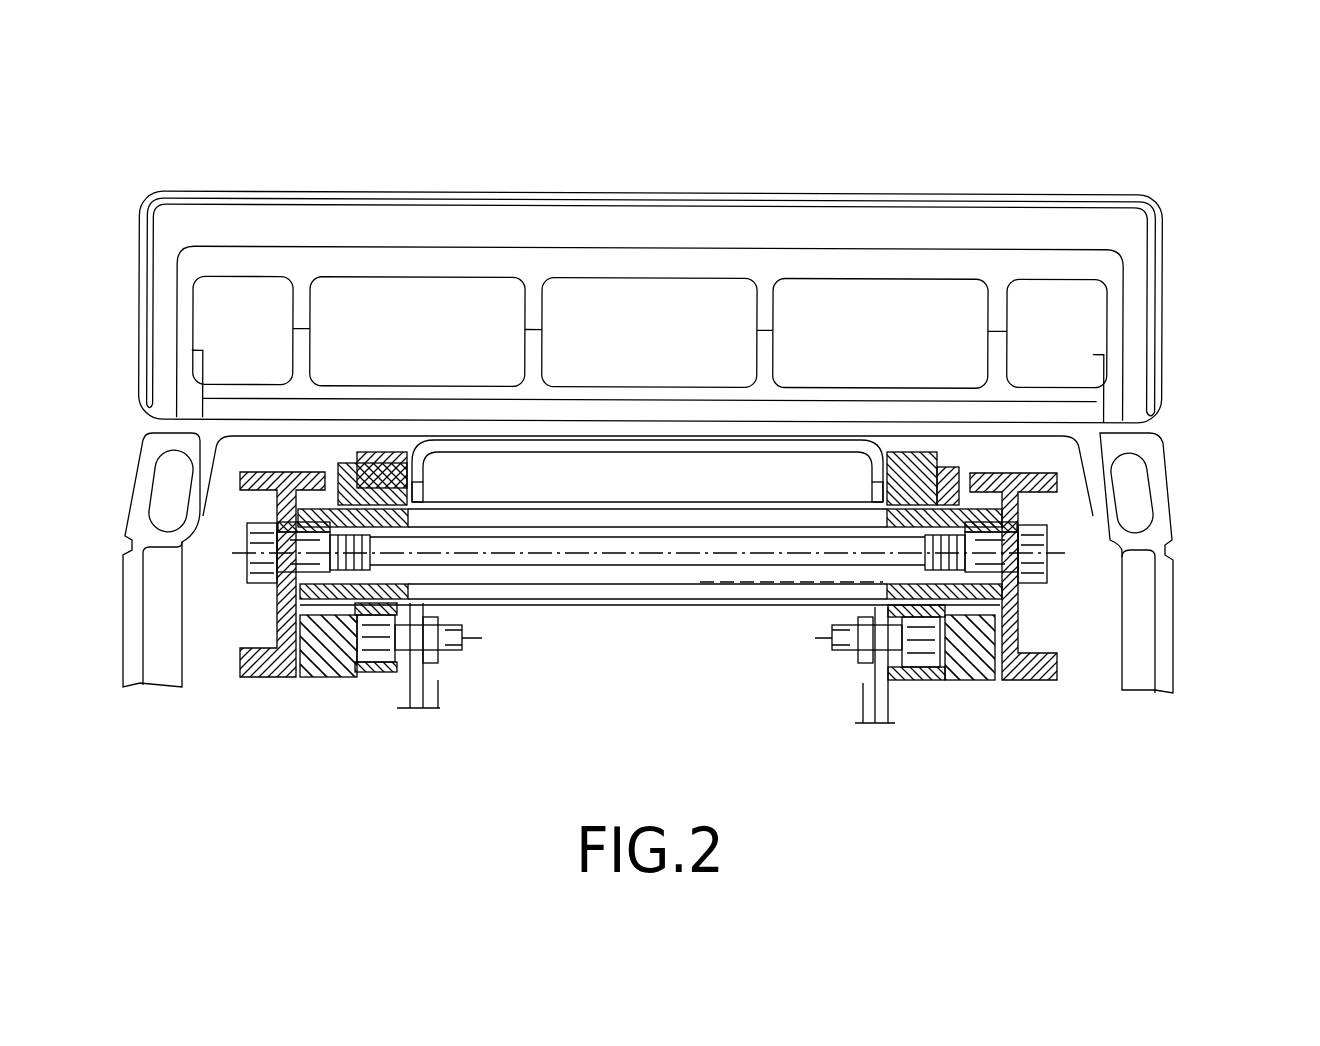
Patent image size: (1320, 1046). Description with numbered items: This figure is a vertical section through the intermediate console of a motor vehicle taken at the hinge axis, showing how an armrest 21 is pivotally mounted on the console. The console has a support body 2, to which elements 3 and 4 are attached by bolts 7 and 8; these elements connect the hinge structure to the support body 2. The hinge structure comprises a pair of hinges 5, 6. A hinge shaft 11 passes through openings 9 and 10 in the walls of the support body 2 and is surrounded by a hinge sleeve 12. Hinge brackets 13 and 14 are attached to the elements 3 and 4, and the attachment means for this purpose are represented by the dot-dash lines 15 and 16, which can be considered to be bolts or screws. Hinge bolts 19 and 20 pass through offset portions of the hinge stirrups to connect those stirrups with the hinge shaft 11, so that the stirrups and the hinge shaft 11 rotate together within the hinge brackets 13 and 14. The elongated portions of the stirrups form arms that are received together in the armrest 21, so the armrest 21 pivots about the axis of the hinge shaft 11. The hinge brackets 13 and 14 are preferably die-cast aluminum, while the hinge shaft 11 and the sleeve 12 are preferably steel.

The support body 2 is at (427, 700).
The element 3 is at (402, 655).
The element 4 is at (912, 680).
The hinge 5 is at (310, 461).
The hinge 6 is at (985, 461).
The bolt 7 is at (455, 651).
The bolt 8 is at (832, 653).
The opening 9 is at (430, 498).
The opening 10 is at (865, 498).
The hinge shaft 11 is at (597, 558).
The hinge sleeve 12 is at (712, 507).
The hinge bracket 13 is at (323, 667).
The hinge bracket 14 is at (982, 680).
The attachment means 15 is at (348, 452).
The attachment means 16 is at (950, 452).
The hinge bolt 19 is at (243, 577).
The hinge bolt 20 is at (1040, 588).
The armrest 21 is at (772, 190).